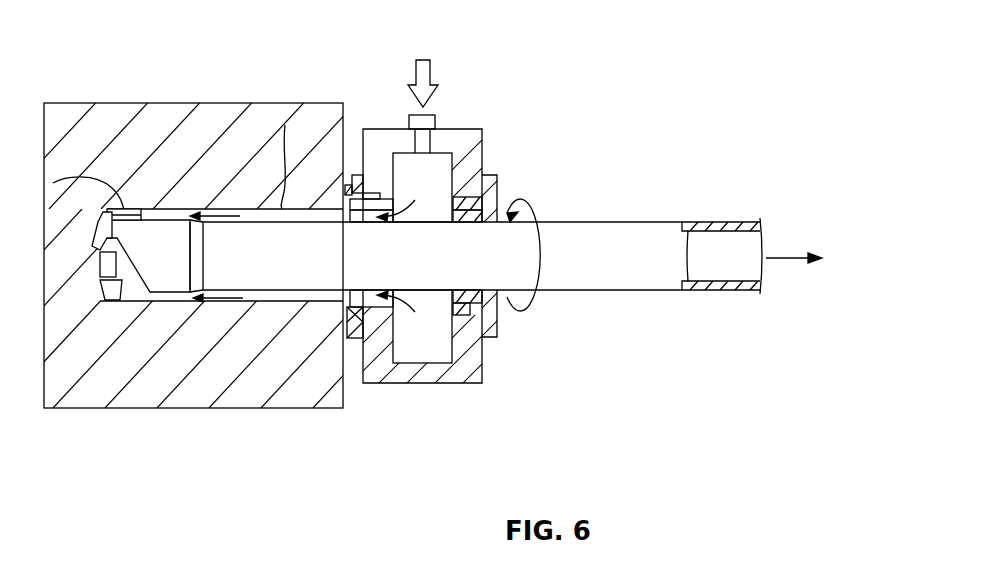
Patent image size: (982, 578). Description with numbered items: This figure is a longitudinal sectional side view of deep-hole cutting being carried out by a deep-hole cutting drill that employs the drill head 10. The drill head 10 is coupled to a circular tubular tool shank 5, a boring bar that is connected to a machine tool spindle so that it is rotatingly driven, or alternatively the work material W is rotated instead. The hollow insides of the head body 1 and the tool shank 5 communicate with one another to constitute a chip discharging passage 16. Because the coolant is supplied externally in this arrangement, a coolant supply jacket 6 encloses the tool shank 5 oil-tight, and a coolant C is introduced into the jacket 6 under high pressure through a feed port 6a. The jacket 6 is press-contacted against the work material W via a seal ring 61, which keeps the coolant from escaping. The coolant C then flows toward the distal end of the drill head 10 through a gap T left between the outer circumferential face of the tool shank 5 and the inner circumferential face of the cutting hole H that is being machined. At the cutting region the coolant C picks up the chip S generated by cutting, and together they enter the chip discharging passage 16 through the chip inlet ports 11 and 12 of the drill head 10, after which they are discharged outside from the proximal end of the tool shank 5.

The work material W is at (153, 123).
The cutting hole H is at (287, 298).
The head body 1 is at (62, 178).
The gap T is at (285, 125).
The drill head 10 is at (170, 268).
The chip inlet port 11 is at (133, 277).
The chip inlet port 12 is at (117, 290).
The tool shank 5 is at (636, 268).
The chip discharging passage 16 is at (722, 250).
The chip S is at (820, 259).
The coolant supply jacket 6 is at (405, 386).
The feed port 6a is at (424, 123).
The seal ring 61 is at (343, 325).
The coolant C is at (423, 64).